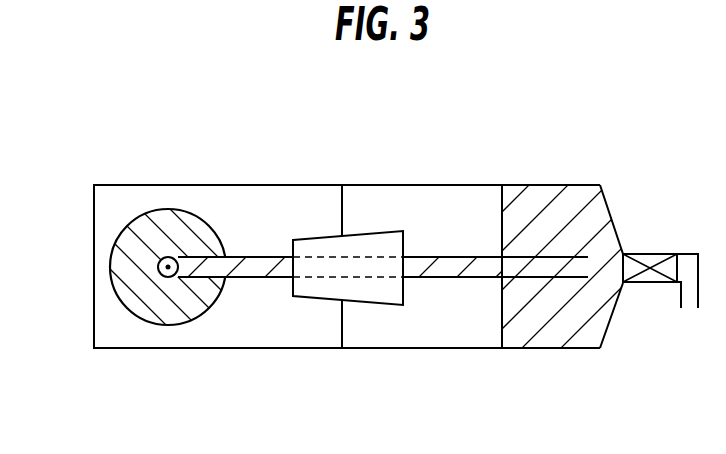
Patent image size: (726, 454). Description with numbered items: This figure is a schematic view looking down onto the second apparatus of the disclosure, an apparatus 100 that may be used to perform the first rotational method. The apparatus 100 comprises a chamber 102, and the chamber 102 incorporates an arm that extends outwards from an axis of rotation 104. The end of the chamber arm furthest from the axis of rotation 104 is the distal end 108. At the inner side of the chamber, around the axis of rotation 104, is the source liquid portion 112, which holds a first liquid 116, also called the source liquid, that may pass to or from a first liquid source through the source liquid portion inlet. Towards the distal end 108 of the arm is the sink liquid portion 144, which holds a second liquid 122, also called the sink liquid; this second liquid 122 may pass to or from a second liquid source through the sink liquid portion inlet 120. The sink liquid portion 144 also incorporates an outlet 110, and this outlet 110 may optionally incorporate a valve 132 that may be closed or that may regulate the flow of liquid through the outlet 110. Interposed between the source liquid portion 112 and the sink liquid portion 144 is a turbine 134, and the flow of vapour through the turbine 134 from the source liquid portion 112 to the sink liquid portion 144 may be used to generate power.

The apparatus 100 is at (438, 111).
The chamber 102 is at (283, 190).
The axis of rotation 104 is at (164, 267).
The distal end 108 is at (605, 195).
The outlet 110 is at (690, 308).
The source liquid portion 112 is at (168, 208).
The first liquid 116 is at (167, 320).
The sink liquid portion inlet 120 is at (449, 270).
The second liquid 122 is at (558, 340).
The valve 132 is at (652, 262).
The turbine 134 is at (367, 247).
The sink liquid portion 144 is at (566, 185).